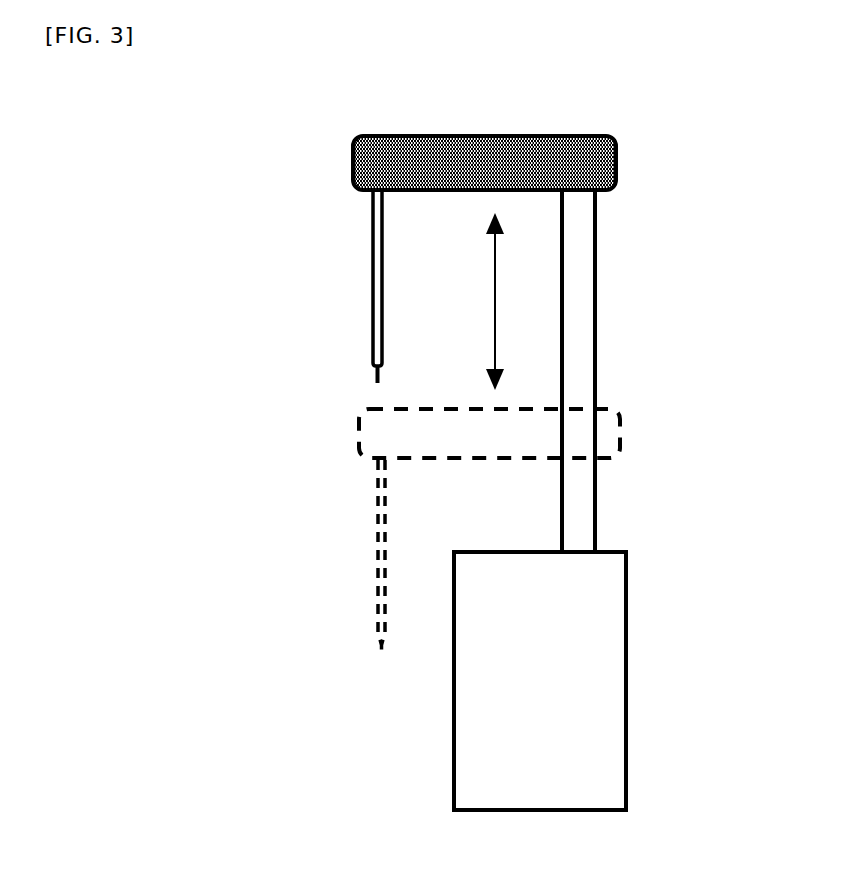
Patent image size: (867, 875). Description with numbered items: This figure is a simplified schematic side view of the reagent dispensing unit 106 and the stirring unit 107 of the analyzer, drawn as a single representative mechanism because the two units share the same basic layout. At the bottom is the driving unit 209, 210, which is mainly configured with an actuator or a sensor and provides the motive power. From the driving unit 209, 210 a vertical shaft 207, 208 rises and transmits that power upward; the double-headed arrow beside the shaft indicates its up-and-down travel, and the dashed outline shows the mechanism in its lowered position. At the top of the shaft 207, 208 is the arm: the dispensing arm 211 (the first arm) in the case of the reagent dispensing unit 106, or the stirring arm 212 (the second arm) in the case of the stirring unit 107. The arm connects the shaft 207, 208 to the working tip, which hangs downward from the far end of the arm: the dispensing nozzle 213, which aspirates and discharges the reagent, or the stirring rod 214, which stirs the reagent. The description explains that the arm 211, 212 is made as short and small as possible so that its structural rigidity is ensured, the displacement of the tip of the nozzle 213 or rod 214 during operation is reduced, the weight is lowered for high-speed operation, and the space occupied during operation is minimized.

The reagent dispensing unit 106 is at (411, 364).
The stirring unit 107 is at (306, 134).
The dispensing arm 211 is at (553, 174).
The stirring arm 212 is at (620, 170).
The shaft 207 is at (655, 371).
The shaft 208 is at (598, 330).
The dispensing nozzle 213 is at (316, 303).
The stirring rod 214 is at (372, 346).
The driving unit 209 is at (613, 681).
The driving unit 210 is at (630, 685).